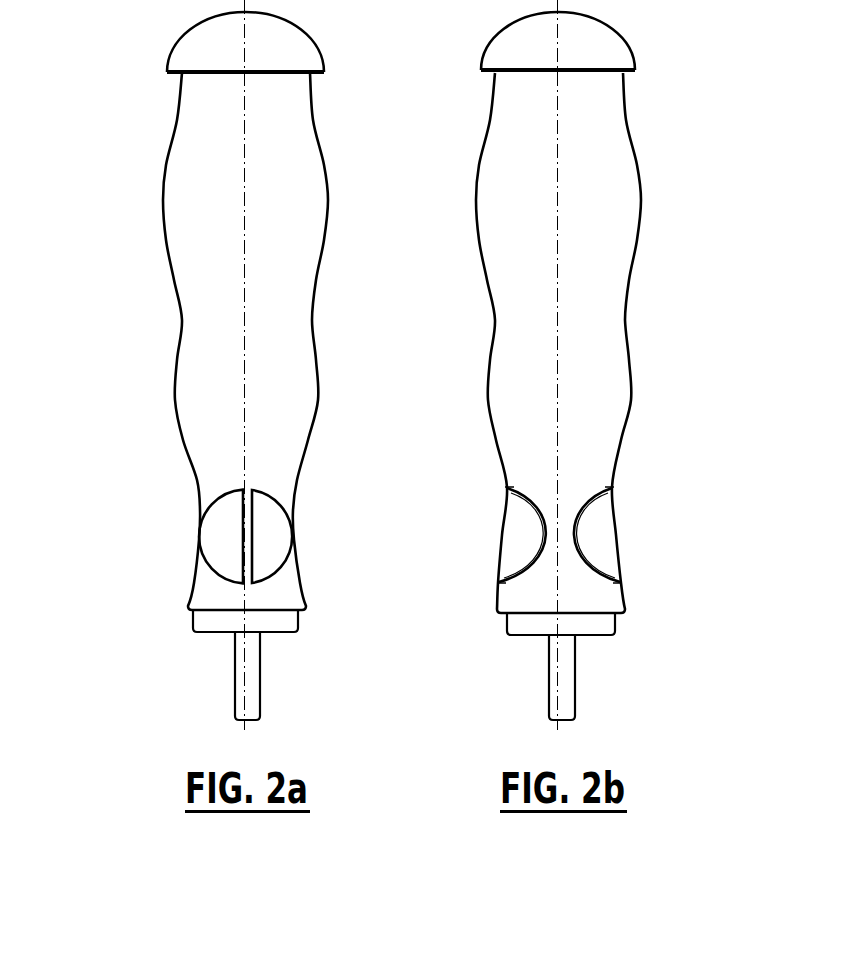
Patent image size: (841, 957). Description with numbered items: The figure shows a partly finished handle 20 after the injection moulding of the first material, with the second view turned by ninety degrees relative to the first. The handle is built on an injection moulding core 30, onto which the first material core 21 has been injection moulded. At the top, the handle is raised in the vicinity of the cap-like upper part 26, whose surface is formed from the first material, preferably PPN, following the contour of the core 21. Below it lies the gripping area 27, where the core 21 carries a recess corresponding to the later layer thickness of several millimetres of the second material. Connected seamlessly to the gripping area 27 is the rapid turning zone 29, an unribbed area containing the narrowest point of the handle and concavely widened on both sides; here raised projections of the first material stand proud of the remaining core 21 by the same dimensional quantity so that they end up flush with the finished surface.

In FIG. 2a, the handle 20 is at (68, 18).
In FIG. 2b, the handle 20 is at (746, 12).
In FIG. 2a, the core 21 is at (297, 315).
In FIG. 2b, the core 21 is at (512, 311).
In FIG. 2a, the cap-like upper part 26 is at (305, 48).
In FIG. 2b, the cap-like upper part 26 is at (500, 46).
In FIG. 2a, the gripping area 27 is at (137, 82).
In FIG. 2a, the rapid turning zone 29 is at (140, 485).
In FIG. 2b, the rapid turning zone 29 is at (662, 485).
In FIG. 2a, the injection moulding core 30 is at (255, 678).
In FIG. 2b, the injection moulding core 30 is at (555, 678).